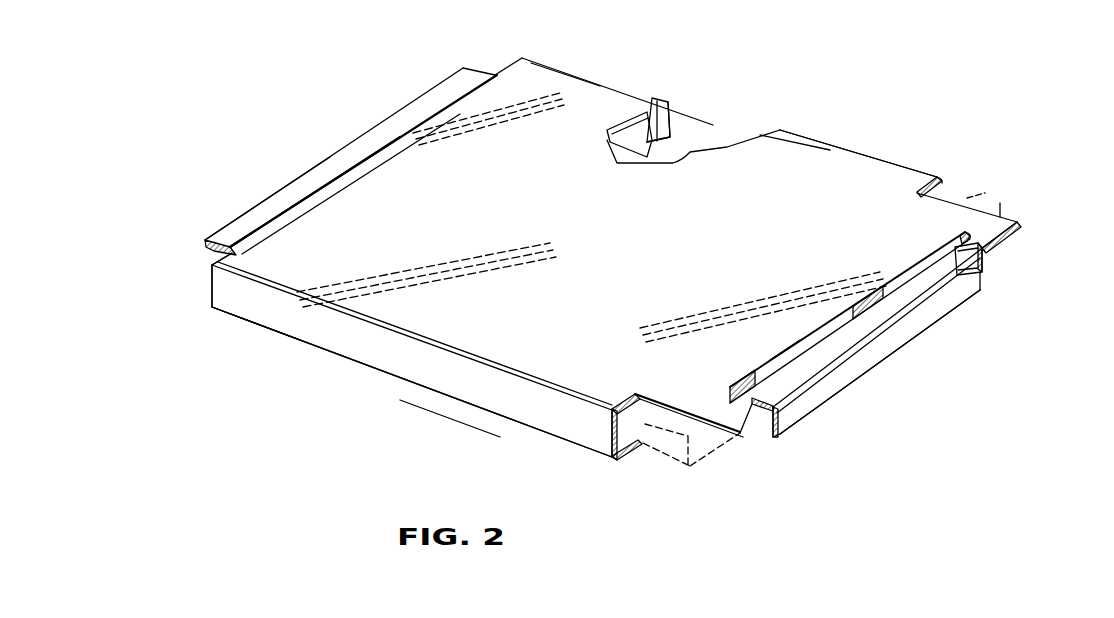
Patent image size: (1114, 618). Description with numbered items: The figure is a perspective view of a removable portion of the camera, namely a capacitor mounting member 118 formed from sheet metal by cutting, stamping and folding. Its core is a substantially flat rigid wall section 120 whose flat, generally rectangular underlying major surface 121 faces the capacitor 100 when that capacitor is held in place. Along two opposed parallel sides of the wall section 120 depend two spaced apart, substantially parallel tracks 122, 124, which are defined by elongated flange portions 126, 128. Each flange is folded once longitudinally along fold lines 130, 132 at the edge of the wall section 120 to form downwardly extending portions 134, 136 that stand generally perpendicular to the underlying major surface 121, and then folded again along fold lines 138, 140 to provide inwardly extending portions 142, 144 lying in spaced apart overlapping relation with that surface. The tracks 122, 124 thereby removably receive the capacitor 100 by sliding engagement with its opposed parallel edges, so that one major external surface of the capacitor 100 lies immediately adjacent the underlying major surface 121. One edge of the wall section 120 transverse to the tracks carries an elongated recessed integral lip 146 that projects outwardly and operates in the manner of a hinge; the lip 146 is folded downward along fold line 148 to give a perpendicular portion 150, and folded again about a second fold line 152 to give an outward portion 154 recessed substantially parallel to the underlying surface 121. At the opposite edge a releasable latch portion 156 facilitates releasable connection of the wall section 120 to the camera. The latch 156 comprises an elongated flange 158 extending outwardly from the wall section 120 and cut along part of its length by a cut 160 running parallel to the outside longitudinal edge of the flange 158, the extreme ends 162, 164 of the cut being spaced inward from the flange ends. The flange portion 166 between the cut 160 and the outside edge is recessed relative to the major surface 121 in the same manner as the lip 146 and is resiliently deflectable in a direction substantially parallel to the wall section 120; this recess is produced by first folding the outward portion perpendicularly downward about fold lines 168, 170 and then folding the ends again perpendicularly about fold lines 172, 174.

The capacitor 100 is at (690, 468).
The capacitor mounting member 118 is at (800, 120).
The wall section 120 is at (651, 240).
The underlying major surface 121 is at (877, 303).
The track 122 is at (640, 418).
The track 124 is at (948, 193).
The flange portion 126 is at (460, 380).
The flange portion 128 is at (948, 182).
The fold line 130 is at (500, 367).
The fold line 132 is at (853, 150).
The downwardly extending portion 134 is at (280, 316).
The downwardly extending portion 136 is at (672, 114).
The fold line 138 is at (517, 422).
The fold line 140 is at (652, 97).
The inwardly extending portion 142 is at (630, 447).
The inwardly extending portion 144 is at (607, 135).
The recessed integral lip 146 is at (337, 152).
The fold line 148 is at (300, 202).
The lip portion 150 is at (210, 265).
The second fold line 152 is at (224, 252).
The lip portion 154 is at (243, 215).
The releasable latch portion 156 is at (870, 375).
The elongated flange 158 is at (748, 425).
The cut 160 is at (830, 325).
The end of cut 162 is at (728, 400).
The end of cut 164 is at (963, 232).
The flange portion 166 is at (850, 390).
The fold line 168 is at (787, 363).
The fold line 170 is at (1010, 243).
The fold line 172 is at (768, 432).
The fold line 174 is at (960, 278).